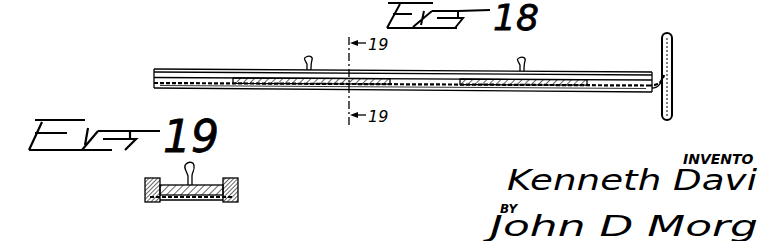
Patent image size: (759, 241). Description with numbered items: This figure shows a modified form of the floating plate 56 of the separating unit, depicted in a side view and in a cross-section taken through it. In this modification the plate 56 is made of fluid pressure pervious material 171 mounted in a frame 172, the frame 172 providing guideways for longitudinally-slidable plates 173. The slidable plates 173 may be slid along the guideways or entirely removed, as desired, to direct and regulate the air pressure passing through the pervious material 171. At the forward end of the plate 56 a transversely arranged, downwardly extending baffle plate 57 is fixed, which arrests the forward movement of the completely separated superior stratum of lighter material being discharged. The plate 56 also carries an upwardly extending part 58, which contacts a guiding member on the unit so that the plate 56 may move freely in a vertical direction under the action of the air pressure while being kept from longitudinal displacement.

In FIG. 18, the plate 56 is at (195, 82).
In FIG. 18, the baffle plate 57 is at (662, 105).
In FIG. 18, the upwardly extending part 58 is at (661, 42).
In FIG. 18, the fluid pressure pervious material 171 is at (435, 88).
In FIG. 19, the fluid pressure pervious material 171 is at (194, 200).
In FIG. 18, the frame 172 is at (413, 76).
In FIG. 19, the frame 172 is at (145, 186).
In FIG. 18, the longitudinally-slidable plates 173 is at (256, 81).
In FIG. 19, the longitudinally-slidable plates 173 is at (202, 188).